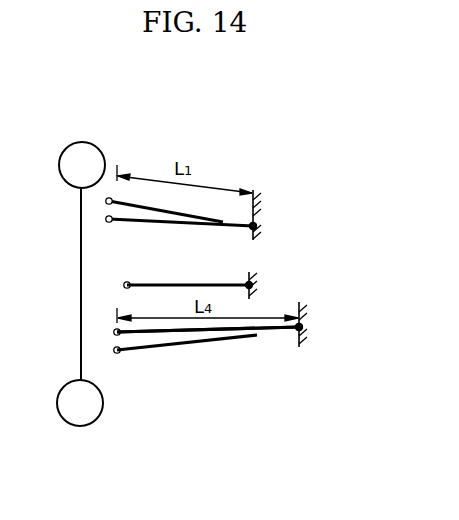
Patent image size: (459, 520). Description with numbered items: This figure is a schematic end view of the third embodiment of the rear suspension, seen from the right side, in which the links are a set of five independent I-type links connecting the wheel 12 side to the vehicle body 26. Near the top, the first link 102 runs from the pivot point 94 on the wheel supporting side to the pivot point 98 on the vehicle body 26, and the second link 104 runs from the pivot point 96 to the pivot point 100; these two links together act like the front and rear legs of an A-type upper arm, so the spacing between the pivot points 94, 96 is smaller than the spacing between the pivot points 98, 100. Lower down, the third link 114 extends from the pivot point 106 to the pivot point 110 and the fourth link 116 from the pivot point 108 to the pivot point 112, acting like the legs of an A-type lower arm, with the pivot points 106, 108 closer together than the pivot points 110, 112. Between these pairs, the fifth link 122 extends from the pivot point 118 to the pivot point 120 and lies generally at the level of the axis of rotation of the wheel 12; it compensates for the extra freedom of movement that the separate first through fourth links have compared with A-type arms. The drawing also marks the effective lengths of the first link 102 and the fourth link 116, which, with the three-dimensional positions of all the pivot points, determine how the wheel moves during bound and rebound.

The wheel 12 is at (67, 148).
The vehicle body 26 is at (256, 214).
The pivot point 94 is at (105, 202).
The pivot point 96 is at (108, 223).
The pivot point 98 is at (256, 226).
The pivot point 100 is at (253, 226).
The first link 102 is at (185, 212).
The second link 104 is at (162, 222).
The pivot point 106 is at (114, 350).
The pivot point 108 is at (114, 330).
The pivot point 110 is at (303, 327).
The pivot point 112 is at (299, 327).
The third link 114 is at (160, 348).
The fourth link 116 is at (205, 332).
The pivot point 118 is at (138, 272).
The pivot point 120 is at (253, 289).
The fifth link 122 is at (206, 284).